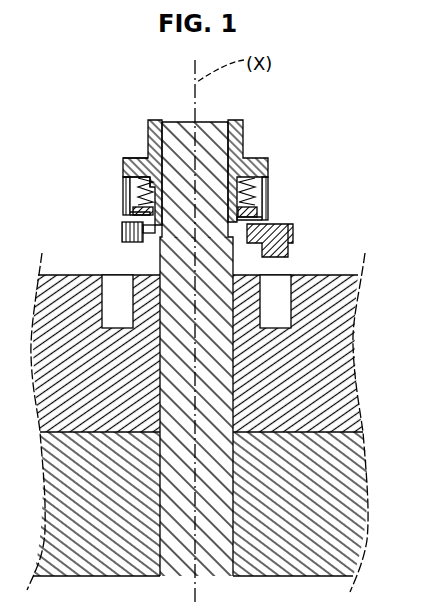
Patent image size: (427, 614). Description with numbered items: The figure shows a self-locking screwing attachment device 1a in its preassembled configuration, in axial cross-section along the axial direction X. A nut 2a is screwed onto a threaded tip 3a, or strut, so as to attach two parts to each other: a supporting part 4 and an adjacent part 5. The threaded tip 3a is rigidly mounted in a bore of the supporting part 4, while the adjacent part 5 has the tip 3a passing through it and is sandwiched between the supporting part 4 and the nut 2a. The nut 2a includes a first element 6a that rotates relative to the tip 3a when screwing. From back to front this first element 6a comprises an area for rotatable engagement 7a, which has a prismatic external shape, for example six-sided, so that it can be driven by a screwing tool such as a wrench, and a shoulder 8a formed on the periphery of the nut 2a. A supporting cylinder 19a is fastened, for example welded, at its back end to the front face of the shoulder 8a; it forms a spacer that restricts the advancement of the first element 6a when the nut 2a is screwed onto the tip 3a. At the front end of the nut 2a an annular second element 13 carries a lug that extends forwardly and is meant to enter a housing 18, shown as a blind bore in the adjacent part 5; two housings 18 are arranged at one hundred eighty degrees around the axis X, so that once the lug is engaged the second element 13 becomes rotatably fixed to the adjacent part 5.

The sealing device 1a is at (118, 107).
The nut 2a is at (300, 143).
The threaded tip 3a is at (208, 147).
The supporting part 4 is at (355, 465).
The adjacent part 5 is at (337, 337).
The first element 6a is at (237, 140).
The area for rotatable engagement 7a is at (143, 135).
The shoulder 8a is at (122, 163).
The stop ring 13 is at (297, 232).
The housing 18 is at (118, 290).
The supporting cylinder 19a is at (267, 183).